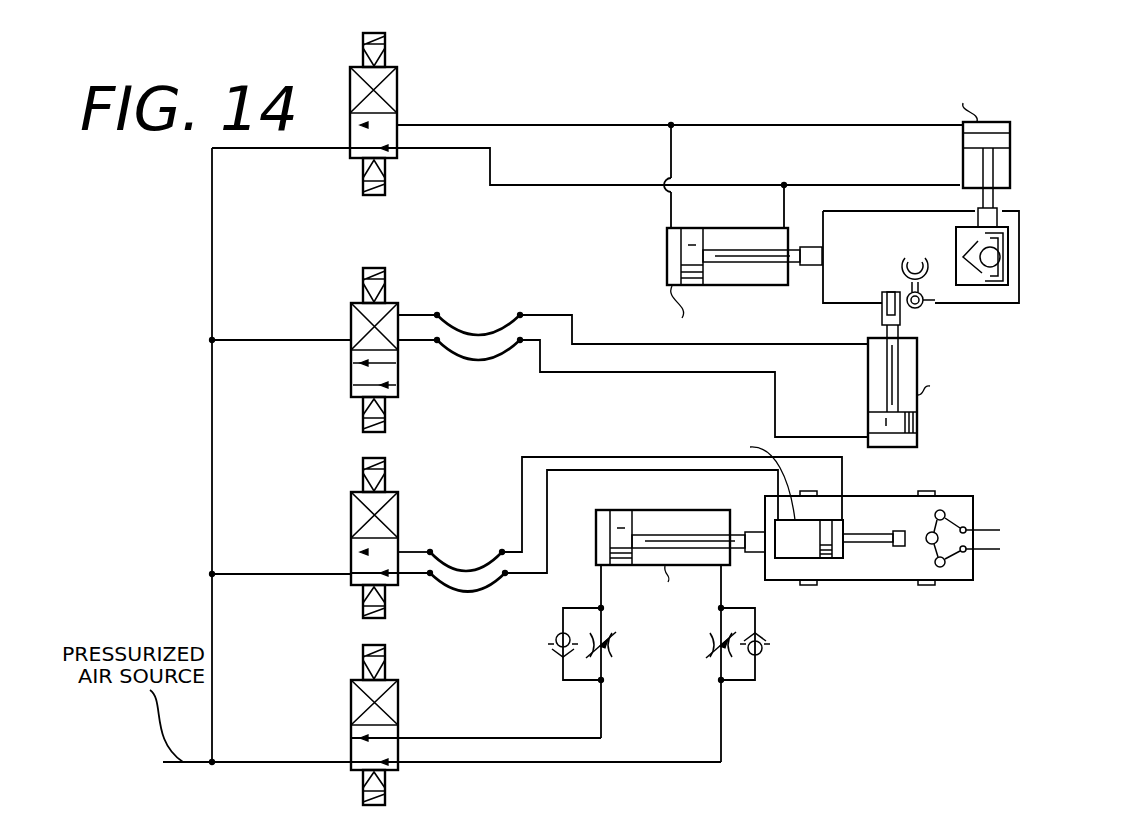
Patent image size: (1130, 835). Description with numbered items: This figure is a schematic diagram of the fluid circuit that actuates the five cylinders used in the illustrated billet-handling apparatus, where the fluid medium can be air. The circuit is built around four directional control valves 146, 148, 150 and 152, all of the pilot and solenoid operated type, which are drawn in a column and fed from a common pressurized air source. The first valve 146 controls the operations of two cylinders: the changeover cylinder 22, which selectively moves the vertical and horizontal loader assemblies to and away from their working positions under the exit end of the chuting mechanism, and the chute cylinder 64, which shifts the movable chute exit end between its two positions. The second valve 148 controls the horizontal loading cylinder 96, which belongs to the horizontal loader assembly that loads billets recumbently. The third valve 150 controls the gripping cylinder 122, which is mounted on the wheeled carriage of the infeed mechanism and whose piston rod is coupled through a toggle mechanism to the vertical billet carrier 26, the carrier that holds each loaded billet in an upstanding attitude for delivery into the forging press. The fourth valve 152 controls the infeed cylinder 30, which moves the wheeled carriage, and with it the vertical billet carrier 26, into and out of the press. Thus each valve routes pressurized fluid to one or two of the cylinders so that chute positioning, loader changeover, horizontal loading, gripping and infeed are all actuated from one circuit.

The first directional control valve 146 is at (399, 87).
The second directional control valve 148 is at (400, 372).
The third directional control valve 150 is at (400, 510).
The fourth directional control valve 152 is at (400, 690).
The changeover cylinder 22 is at (725, 228).
The chute cylinder 64 is at (1012, 162).
The horizontal loading cylinder 96 is at (918, 355).
The infeed cylinder 30 is at (655, 510).
The vertical billet carrier 26 is at (965, 510).
The gripping cylinder 122 is at (812, 559).